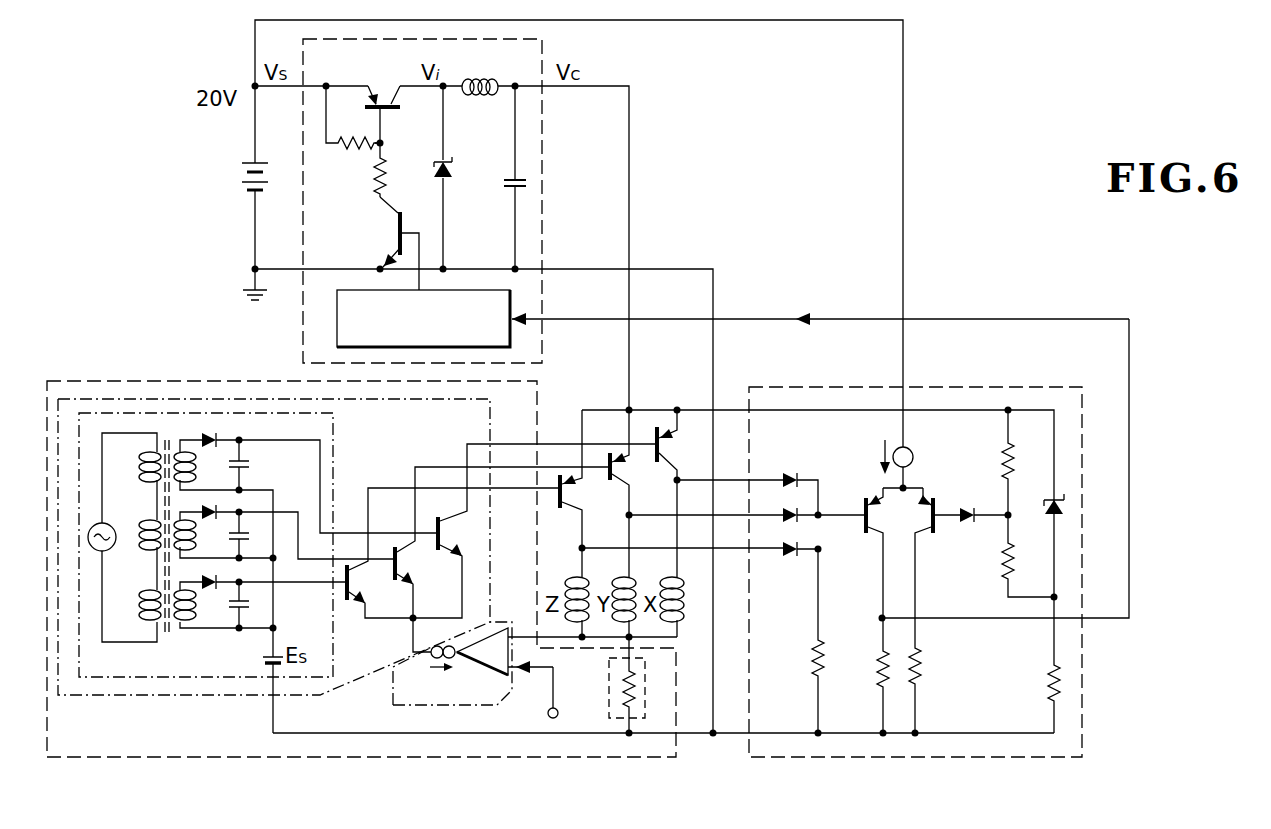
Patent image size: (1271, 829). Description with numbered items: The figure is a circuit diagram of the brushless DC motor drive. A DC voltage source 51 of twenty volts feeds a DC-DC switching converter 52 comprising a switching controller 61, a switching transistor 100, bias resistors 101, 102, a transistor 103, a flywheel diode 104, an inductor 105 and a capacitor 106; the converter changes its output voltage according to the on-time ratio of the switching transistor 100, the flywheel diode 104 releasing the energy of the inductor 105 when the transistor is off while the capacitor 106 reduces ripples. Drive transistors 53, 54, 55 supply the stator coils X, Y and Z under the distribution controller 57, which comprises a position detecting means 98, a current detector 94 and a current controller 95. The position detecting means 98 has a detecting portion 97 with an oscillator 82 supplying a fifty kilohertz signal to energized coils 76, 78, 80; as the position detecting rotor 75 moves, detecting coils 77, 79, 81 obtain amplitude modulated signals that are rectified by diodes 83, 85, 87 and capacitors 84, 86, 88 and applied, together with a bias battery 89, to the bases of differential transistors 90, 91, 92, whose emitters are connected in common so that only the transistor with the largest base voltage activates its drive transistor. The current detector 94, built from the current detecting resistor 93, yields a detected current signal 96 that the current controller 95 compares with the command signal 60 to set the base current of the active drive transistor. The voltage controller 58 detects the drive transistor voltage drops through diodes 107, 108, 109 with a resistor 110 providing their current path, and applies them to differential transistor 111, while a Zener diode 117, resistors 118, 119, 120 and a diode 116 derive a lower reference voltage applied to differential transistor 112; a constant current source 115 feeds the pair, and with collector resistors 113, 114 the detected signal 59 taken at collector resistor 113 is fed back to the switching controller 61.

The DC voltage source 51 is at (244, 162).
The DC-DC switching converter 52 is at (552, 48).
The drive transistor 53 is at (670, 455).
The drive transistor 54 is at (628, 480).
The drive transistor 55 is at (569, 506).
The distribution controller 57 is at (358, 759).
The voltage controller 58 is at (847, 759).
The detected signal 59 is at (815, 318).
The command signal 60 is at (545, 675).
The switching controller 61 is at (337, 342).
The position detecting rotor 75 is at (166, 525).
The energized coil 76 is at (147, 473).
The detecting coil 77 is at (193, 470).
The energized coil 78 is at (147, 530).
The detecting coil 79 is at (187, 536).
The energized coil 80 is at (147, 604).
The detecting coil 81 is at (223, 608).
The oscillator 82 is at (122, 537).
The diode 83 is at (222, 440).
The capacitor 84 is at (243, 462).
The diode 85 is at (197, 513).
The capacitor 86 is at (248, 538).
The diode 87 is at (203, 581).
The capacitor 88 is at (254, 606).
The bias battery 89 is at (263, 661).
The differential transistor 90 is at (446, 540).
The differential transistor 91 is at (402, 578).
The differential transistor 92 is at (362, 595).
The current detecting resistor 93 is at (616, 700).
The current detector 94 is at (607, 680).
The current controller 95 is at (496, 681).
The detected current signal 96 is at (520, 632).
The detecting portion 97 is at (338, 467).
The position detecting means 98 is at (152, 696).
The switching transistor 100 is at (382, 72).
The bias resistor 101 is at (343, 150).
The bias resistor 102 is at (371, 190).
The transistor 103 is at (385, 232).
The flywheel diode 104 is at (432, 177).
The inductor 105 is at (497, 70).
The capacitor 106 is at (506, 182).
The diode 107 is at (782, 476).
The diode 108 is at (798, 494).
The diode 109 is at (780, 557).
The resistor 110 is at (808, 648).
The differential transistor 111 is at (862, 538).
The differential transistor 112 is at (931, 537).
The collector resistor 113 is at (878, 660).
The collector resistor 114 is at (922, 665).
The constant current source 115 is at (912, 453).
The diode 116 is at (966, 506).
The Zener diode 117 is at (1047, 516).
The resistor 118 is at (1002, 460).
The resistor 119 is at (1000, 572).
The resistor 120 is at (1046, 668).